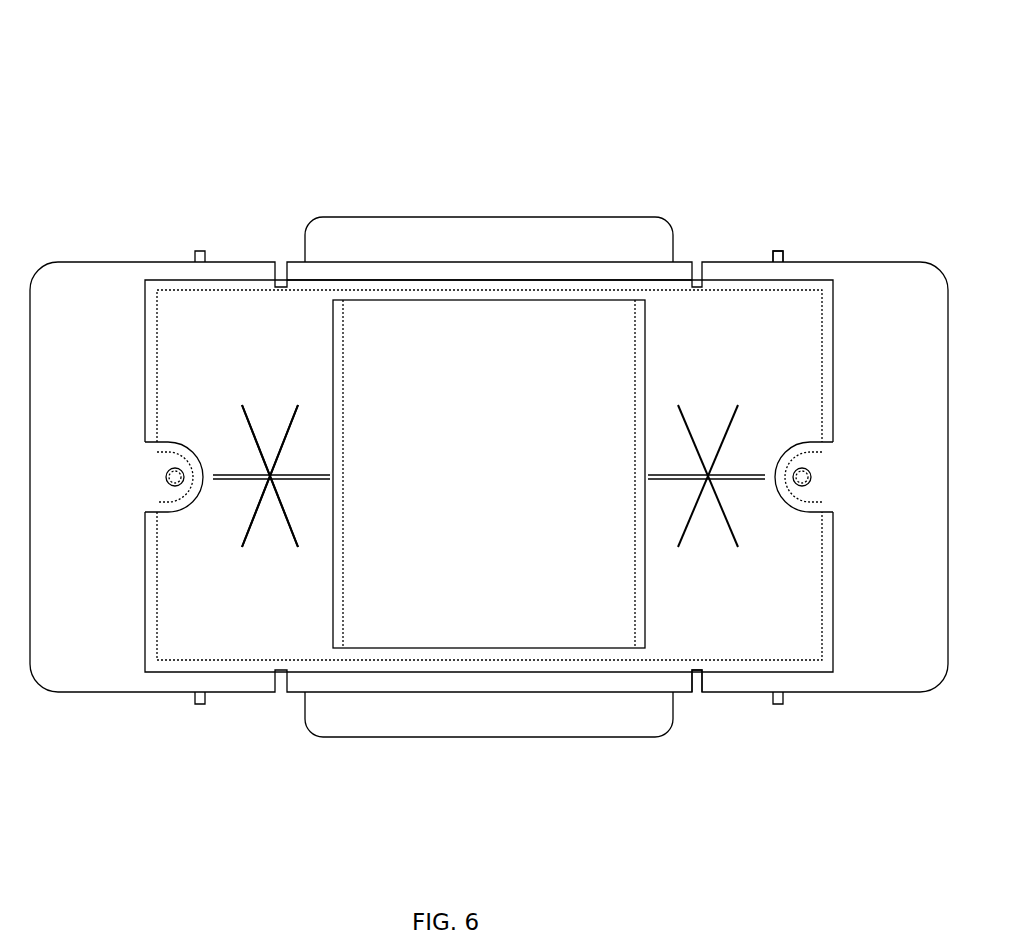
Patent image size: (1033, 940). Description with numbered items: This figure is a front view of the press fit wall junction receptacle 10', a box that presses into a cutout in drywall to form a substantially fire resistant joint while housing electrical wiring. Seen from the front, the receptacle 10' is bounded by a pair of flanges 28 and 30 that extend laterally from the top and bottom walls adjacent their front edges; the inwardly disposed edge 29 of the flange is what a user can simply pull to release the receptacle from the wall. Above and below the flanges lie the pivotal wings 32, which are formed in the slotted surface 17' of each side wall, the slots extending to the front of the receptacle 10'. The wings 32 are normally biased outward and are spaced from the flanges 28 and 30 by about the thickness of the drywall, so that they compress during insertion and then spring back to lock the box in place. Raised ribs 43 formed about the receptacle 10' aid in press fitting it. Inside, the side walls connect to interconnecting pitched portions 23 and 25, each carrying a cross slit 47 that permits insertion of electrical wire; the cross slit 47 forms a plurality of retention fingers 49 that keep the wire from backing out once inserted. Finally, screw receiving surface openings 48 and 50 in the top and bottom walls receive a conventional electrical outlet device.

The press fit wall junction receptacle 10' is at (289, 46).
The slotted surface 17' is at (657, 769).
The pitched portion 23 is at (716, 435).
The pitched portion 25 is at (268, 434).
The flange 28 is at (489, 477).
The front edge 29 is at (332, 686).
The flange 30 is at (460, 476).
The pivotal wing 32 is at (533, 217).
The raised rib 43 is at (776, 250).
The cross slit 47 is at (242, 407).
The screw receiving surface opening 48 is at (801, 480).
The retention finger 49 is at (262, 430).
The screw receiving surface opening 50 is at (176, 480).